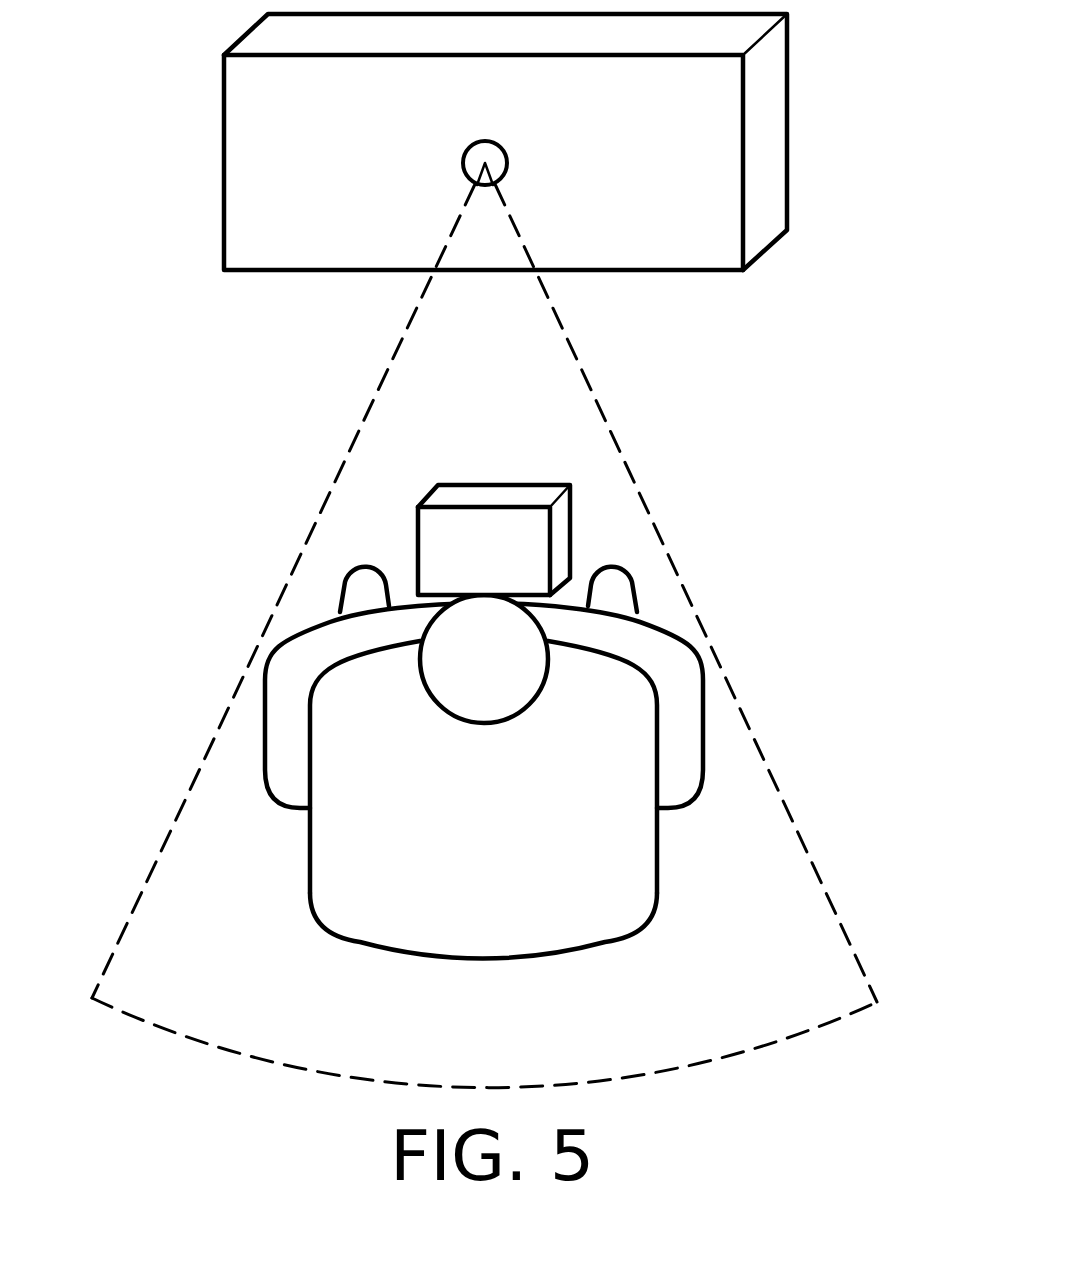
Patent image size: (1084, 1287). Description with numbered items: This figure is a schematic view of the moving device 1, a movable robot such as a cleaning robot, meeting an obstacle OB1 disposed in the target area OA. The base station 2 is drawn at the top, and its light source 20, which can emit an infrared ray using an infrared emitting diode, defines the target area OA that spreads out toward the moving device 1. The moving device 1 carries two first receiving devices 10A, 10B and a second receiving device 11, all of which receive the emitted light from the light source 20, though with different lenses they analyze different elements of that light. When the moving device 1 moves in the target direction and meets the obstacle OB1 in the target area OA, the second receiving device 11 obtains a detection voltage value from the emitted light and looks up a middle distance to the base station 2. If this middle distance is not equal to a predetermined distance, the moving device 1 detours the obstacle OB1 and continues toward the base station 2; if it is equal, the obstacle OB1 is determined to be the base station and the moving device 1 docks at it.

The moving device 1 is at (502, 763).
The base station 2 is at (788, 118).
The light source 20 is at (463, 163).
The first receiving device 10A is at (338, 598).
The first receiving device 10B is at (634, 599).
The second receiving device 11 is at (541, 690).
The target area OA is at (615, 433).
The obstacle OB1 is at (572, 532).